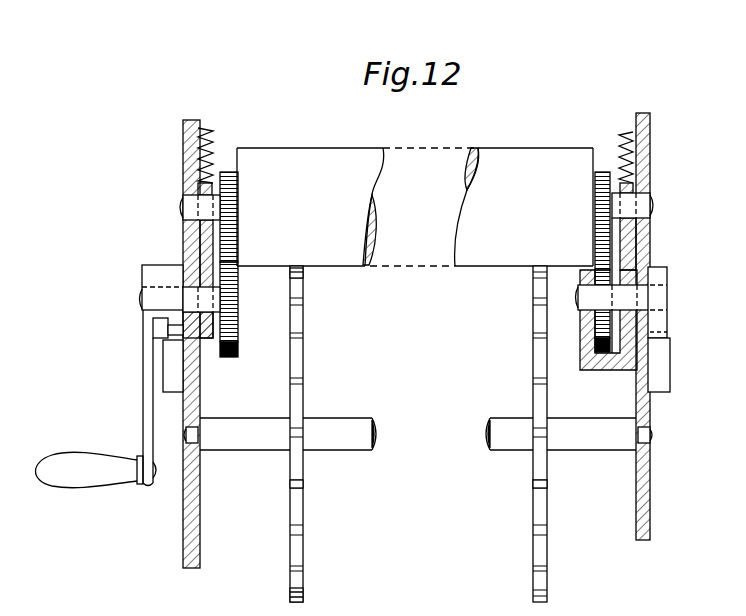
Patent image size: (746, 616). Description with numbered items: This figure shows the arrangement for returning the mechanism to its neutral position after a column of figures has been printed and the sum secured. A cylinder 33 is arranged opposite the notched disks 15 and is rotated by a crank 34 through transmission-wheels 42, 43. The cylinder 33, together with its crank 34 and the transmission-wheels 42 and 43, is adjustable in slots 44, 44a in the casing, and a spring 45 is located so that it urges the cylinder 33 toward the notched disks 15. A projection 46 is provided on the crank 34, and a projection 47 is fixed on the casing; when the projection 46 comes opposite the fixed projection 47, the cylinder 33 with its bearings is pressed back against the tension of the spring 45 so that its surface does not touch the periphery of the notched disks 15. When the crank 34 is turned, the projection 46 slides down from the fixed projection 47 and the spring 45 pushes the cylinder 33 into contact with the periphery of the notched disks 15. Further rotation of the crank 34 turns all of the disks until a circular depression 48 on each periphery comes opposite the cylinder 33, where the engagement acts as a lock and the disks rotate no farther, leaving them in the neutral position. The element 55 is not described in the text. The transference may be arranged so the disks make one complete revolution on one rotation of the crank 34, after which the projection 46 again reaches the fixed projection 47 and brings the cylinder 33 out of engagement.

The cylinder 33 is at (415, 207).
The transmission-wheel 43 is at (228, 172).
The transmission-wheel 42 is at (238, 320).
The spring 45 is at (203, 134).
The slot 44 is at (190, 226).
The slot 44a is at (675, 308).
The projection 46 is at (168, 333).
The projection 47 is at (170, 393).
The crank 34 is at (148, 415).
The notched disk 15 is at (303, 525).
The circular depression 48 is at (303, 273).
The collar on rod 55 is at (303, 485).